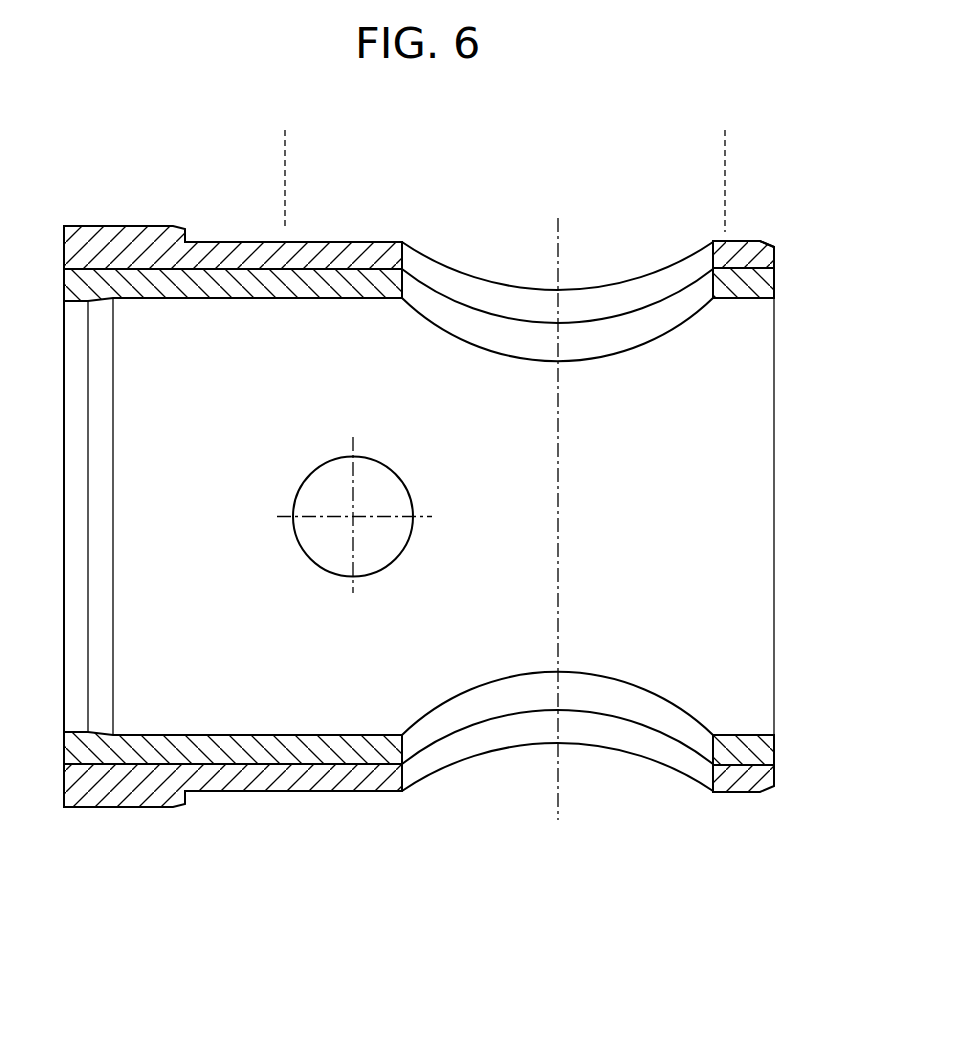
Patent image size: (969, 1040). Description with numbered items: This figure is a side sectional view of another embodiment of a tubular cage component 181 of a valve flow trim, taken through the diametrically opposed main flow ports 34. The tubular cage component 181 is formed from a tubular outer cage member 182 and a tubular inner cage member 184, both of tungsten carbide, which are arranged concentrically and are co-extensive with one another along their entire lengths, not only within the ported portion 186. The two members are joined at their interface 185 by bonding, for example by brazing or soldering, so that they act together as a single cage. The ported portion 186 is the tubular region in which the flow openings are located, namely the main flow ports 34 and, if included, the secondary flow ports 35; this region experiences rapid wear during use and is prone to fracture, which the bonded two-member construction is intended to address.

The main flow port 34 is at (640, 296).
The secondary flow port 35 is at (386, 463).
The tubular cage component 181 is at (785, 224).
The outer cage member 182 is at (776, 257).
The inner cage member 184 is at (766, 283).
The interface 185 is at (294, 766).
The ported portion 186 is at (725, 182).